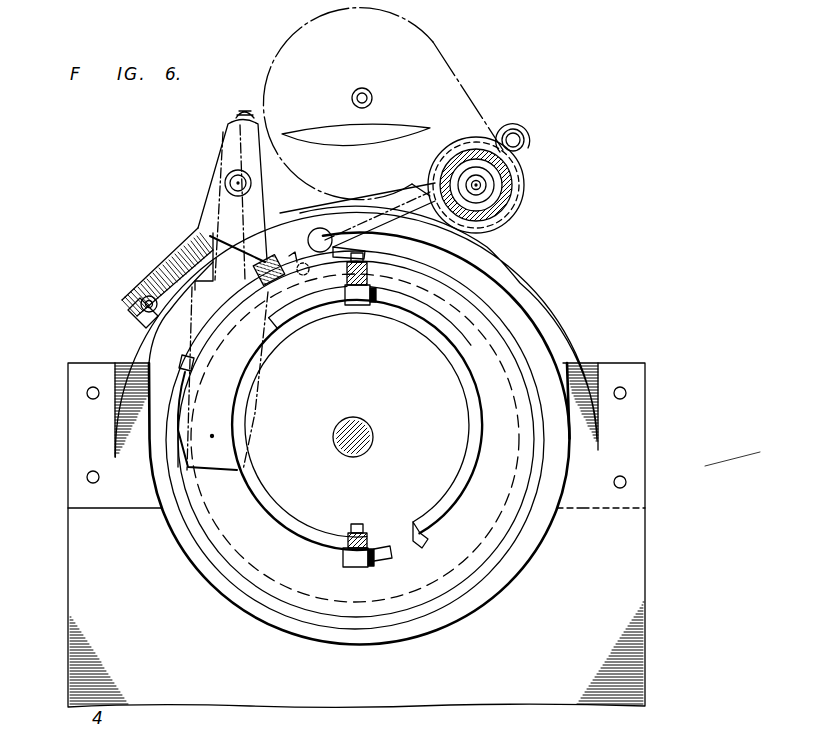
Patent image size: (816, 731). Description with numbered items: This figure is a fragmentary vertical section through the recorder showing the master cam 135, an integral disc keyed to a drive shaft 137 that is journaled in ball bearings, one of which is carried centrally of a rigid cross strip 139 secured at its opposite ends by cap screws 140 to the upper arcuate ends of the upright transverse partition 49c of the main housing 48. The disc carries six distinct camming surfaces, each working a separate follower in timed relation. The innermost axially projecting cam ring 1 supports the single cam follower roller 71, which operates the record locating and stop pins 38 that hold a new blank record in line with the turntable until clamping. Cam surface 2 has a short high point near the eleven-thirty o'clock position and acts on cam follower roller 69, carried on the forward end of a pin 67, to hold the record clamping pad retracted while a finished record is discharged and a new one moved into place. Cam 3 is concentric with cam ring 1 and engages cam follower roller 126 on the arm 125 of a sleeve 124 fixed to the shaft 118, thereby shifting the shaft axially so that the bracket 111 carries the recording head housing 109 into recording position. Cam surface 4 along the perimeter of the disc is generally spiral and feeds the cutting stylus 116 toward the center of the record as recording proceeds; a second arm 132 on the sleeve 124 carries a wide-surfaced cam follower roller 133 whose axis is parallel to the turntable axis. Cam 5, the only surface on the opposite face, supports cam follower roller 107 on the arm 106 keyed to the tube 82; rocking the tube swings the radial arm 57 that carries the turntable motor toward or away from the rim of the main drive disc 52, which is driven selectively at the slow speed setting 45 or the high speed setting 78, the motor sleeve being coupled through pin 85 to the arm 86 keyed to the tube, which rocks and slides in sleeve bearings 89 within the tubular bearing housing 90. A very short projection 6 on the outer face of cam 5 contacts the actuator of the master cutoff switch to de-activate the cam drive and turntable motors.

The cam ring 1 is at (462, 483).
The cam surface 2 is at (305, 300).
The cam 3 is at (415, 617).
The cam surface 4 is at (521, 285).
The cam 5 is at (294, 592).
The projection 6 is at (308, 271).
The stop pin 38 is at (347, 537).
The pin 45 is at (353, 95).
The main housing 48 is at (60, 609).
The upright transverse partition 49c is at (625, 576).
The main drive disc 52 is at (410, 124).
The arm 57 is at (462, 82).
The pin 67 is at (368, 281).
The cam follower roller 69 is at (351, 305).
The cam follower roller 71 is at (356, 567).
The pin 78 is at (363, 88).
The tube 82 is at (484, 200).
The pin 85 is at (516, 128).
The arm 86 is at (532, 140).
The sleeve bearing 89 is at (500, 191).
The tubular bearing housing 90 is at (500, 182).
The arm 106 is at (404, 200).
The cam follower roller 107 is at (322, 228).
The recording head housing 109 is at (254, 418).
The bracket 111 is at (226, 136).
The stylus 116 is at (214, 437).
The shaft 118 is at (231, 185).
The sleeve 124 is at (229, 175).
The arm 125 is at (258, 212).
The cam follower roller 126 is at (273, 259).
The arm 132 is at (200, 226).
The cam follower roller 133 is at (140, 298).
The master cam 135 is at (558, 314).
The drive shaft 137 is at (374, 437).
The cross strip 139 is at (584, 372).
The cap screw 140 is at (86, 393).